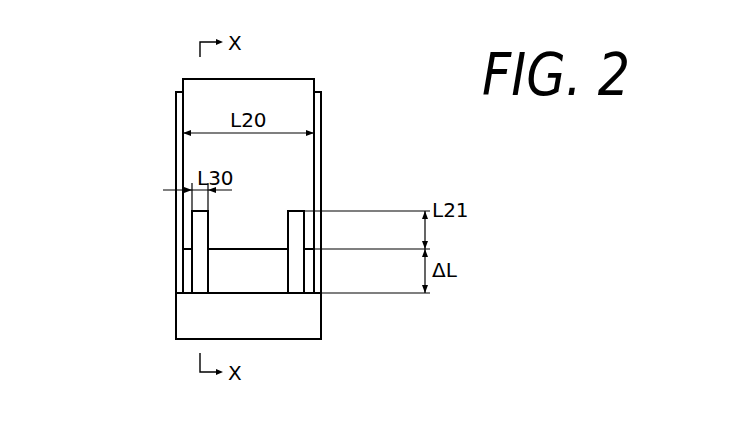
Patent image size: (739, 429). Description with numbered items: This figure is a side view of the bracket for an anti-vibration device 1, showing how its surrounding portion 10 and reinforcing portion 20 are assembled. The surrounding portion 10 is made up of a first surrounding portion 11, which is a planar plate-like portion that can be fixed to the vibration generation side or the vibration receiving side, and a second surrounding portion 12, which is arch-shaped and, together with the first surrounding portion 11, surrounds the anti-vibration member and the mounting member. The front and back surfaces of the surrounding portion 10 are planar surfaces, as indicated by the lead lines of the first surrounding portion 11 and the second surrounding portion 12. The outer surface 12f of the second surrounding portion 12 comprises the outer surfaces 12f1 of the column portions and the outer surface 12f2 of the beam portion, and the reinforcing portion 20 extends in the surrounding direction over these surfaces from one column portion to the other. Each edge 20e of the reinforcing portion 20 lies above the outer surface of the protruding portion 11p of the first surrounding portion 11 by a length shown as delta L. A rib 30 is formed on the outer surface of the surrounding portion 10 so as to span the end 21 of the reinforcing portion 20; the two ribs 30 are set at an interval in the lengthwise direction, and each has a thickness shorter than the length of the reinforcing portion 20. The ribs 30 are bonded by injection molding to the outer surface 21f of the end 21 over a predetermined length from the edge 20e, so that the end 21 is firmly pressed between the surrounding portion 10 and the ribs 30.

The bracket for an anti-vibration device 1 is at (136, 93).
The surrounding portion 10 is at (170, 164).
The first surrounding portion 11 is at (165, 309).
The protruding portion 11p is at (310, 315).
The second surrounding portion 12 is at (327, 145).
The outer surface of the second surrounding portion 12f is at (305, 225).
The outer surface of the column portion 12f1 is at (217, 272).
The outer surface of the beam portion 12f2 is at (321, 92).
The reinforcing portion 20 is at (252, 75).
The edge of the reinforcing portion 20e is at (253, 249).
The end of the reinforcing portion 21 is at (188, 223).
The outer surface of the end of the reinforcing portion 21f is at (249, 225).
The rib 30 is at (192, 265).